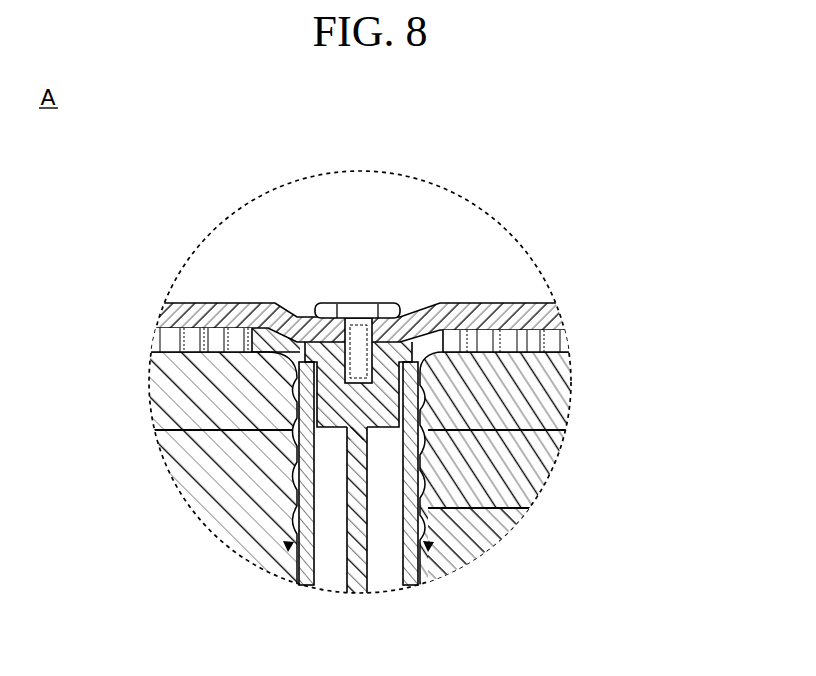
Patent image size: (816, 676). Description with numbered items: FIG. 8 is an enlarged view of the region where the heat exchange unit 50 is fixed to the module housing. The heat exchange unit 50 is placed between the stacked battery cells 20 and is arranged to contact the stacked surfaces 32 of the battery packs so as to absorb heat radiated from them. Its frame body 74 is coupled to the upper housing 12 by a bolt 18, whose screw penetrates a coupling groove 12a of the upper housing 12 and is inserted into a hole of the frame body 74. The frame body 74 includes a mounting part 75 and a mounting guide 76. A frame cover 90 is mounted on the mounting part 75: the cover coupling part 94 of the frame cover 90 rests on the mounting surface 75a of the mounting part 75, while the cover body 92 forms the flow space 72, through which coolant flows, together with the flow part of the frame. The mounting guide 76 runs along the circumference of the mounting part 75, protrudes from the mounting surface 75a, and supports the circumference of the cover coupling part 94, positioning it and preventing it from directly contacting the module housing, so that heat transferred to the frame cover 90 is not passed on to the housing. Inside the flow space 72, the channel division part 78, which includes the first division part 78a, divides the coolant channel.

The upper housing 12 is at (222, 317).
The coupling groove 12a is at (361, 316).
The bolt 18 is at (358, 248).
The mounting guide 76 is at (405, 332).
The frame body 74 is at (298, 383).
The battery cell 20 is at (185, 462).
The cover coupling part 94 is at (421, 370).
The mounting part 75 is at (423, 385).
The mounting surface 75a is at (420, 447).
The flow space 72 is at (420, 478).
The stacked surface 32 is at (432, 452).
The cover body 92 is at (462, 512).
The frame cover 90 is at (430, 548).
The heat exchange unit 50 is at (290, 546).
The channel division part 78 is at (379, 499).
The first division part 78a is at (372, 540).